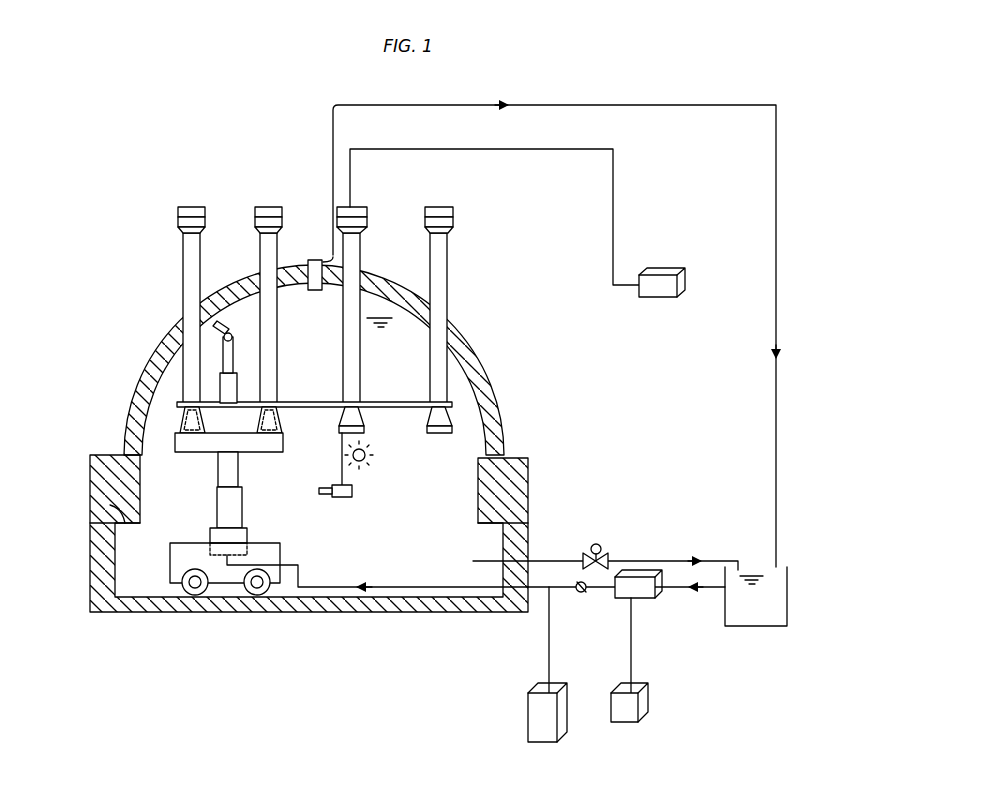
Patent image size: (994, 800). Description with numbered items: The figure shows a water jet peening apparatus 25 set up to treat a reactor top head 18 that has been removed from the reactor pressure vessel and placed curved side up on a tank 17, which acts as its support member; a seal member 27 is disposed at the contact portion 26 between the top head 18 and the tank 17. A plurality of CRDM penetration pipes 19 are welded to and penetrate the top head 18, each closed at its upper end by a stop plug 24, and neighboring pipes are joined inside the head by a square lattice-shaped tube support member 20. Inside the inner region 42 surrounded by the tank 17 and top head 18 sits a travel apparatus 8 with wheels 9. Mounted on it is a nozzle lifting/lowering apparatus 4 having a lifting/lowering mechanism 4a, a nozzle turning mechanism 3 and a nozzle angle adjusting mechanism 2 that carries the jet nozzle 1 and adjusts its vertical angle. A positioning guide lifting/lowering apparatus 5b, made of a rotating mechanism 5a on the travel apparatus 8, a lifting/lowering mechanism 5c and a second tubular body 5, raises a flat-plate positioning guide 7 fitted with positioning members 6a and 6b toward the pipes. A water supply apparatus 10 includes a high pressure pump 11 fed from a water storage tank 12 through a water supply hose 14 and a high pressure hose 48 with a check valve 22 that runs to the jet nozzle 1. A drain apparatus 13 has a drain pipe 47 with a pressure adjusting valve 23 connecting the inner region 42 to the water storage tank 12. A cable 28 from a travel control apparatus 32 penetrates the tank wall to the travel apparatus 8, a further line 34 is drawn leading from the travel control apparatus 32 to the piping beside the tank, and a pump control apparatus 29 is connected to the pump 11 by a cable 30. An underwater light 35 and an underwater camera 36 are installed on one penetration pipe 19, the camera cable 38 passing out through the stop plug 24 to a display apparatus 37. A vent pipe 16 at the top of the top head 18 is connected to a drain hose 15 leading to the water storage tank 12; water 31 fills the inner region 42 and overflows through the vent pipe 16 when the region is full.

The jet nozzle 1 is at (222, 326).
The nozzle angle adjusting mechanism 2 is at (232, 340).
The nozzle turning mechanism 3 is at (225, 366).
The nozzle lifting/lowering apparatus 4 is at (244, 381).
The lifting/lowering mechanism 4a is at (218, 381).
The second tubular body 5 is at (239, 470).
The rotating mechanism 5a is at (248, 534).
The positioning guide lifting/lowering apparatus 5b is at (243, 502).
The lifting/lowering mechanism 5c is at (218, 512).
The positioning member 6a is at (190, 424).
The positioning member 6b is at (280, 421).
The positioning guide 7 is at (197, 452).
The travel apparatus 8 is at (170, 561).
The wheel 9 is at (182, 584).
The water supply apparatus 10 is at (423, 586).
The high pressure pump 11 is at (643, 598).
The water storage tank 12 is at (751, 627).
The drain apparatus 13 is at (480, 561).
The water supply hose 14 is at (708, 587).
The drain hose 15 is at (333, 157).
The vent pipe 16 is at (312, 258).
The tank 17 is at (90, 572).
The top head 18 is at (478, 370).
The CRDM penetration pipe 19 is at (449, 279).
The tube support member 20 is at (377, 402).
The check valve 22 is at (580, 593).
The pressure adjusting valve 23 is at (605, 551).
The stop plug 24 is at (443, 207).
The water jet peening apparatus 25 is at (298, 553).
The contact portion 26 is at (90, 520).
The seal member 27 is at (107, 522).
The cable 28 is at (402, 606).
The pump control apparatus 29 is at (621, 722).
The cable 30 is at (631, 655).
The water 31 is at (381, 330).
The travel control apparatus 32 is at (528, 712).
The signal line 34 is at (549, 655).
The underwater light 35 is at (366, 447).
The underwater camera 36 is at (353, 491).
The display apparatus 37 is at (670, 267).
The cable 38 is at (560, 144).
The inner region 42 is at (458, 458).
The drain pipe 47 is at (553, 561).
The high pressure hose 48 is at (377, 586).